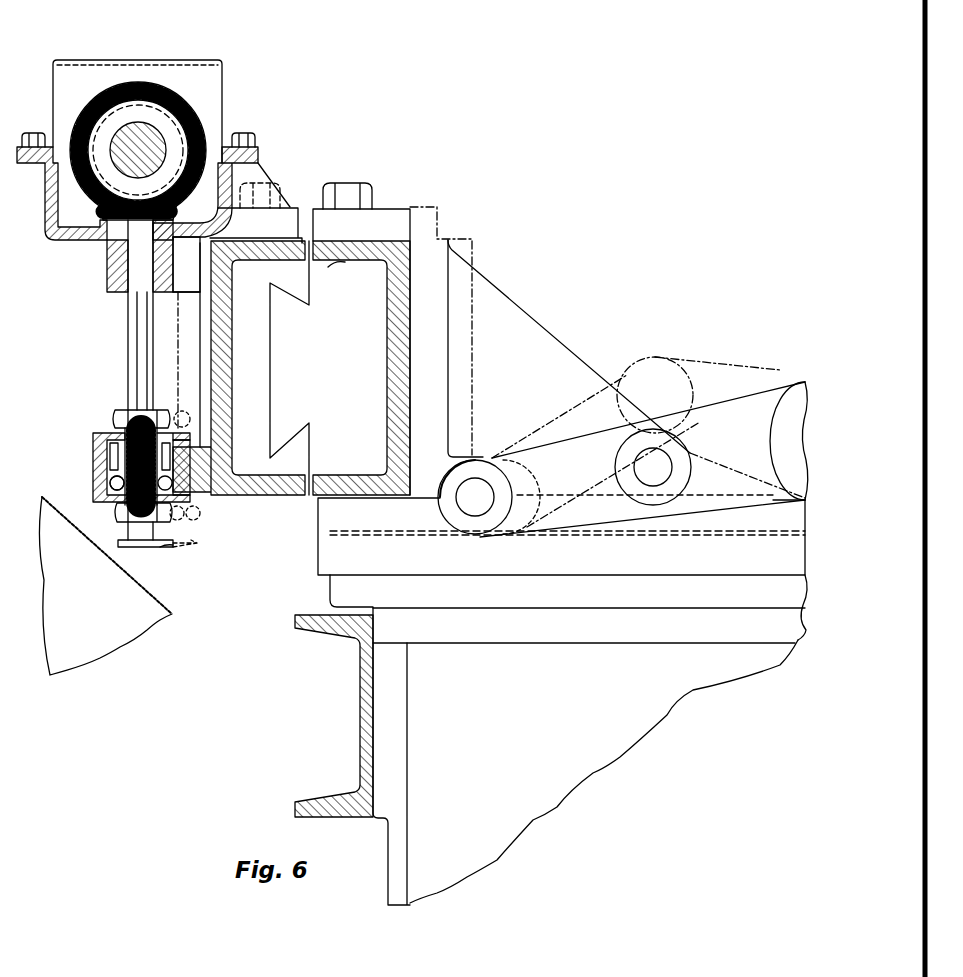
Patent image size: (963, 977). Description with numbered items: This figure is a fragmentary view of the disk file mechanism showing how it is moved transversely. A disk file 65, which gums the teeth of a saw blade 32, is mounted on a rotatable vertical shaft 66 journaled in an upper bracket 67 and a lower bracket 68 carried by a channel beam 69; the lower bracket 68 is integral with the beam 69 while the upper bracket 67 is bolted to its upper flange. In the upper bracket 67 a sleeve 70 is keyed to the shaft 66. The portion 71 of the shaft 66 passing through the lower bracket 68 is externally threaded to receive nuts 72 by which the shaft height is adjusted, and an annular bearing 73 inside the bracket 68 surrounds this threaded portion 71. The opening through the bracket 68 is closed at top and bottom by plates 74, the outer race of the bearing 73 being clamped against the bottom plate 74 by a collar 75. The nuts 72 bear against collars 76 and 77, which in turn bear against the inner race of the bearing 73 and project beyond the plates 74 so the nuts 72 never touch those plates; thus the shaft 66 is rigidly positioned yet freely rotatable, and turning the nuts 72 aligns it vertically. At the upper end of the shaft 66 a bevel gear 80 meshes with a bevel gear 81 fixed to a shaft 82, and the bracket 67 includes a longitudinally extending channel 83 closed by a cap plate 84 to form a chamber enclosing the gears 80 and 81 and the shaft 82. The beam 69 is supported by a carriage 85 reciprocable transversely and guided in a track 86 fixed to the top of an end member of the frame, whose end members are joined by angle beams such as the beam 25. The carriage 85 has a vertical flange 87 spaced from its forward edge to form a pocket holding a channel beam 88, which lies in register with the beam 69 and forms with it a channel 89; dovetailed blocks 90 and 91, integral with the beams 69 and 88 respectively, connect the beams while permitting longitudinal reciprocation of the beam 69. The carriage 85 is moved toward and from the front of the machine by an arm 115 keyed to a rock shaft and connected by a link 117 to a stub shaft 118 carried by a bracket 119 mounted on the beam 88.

The cap plate 84 is at (116, 61).
The bevel gear 81 is at (178, 103).
The shaft 82 is at (148, 140).
The channel 83 is at (66, 203).
The bevel gear 80 is at (97, 218).
The upper bracket 67 is at (112, 222).
The sleeve 70 is at (120, 290).
The shaft 66 is at (128, 344).
The plates 74 is at (101, 434).
The nuts 72 is at (117, 415).
The collar 75 is at (96, 441).
The lower bracket 68 is at (93, 455).
The collar 76 is at (102, 466).
The threaded portion 71 is at (128, 466).
The annular bearing 73 is at (97, 488).
The collar 77 is at (123, 506).
The disk file 65 is at (165, 548).
The blade 32 is at (105, 586).
The channel beam 69 is at (225, 333).
The dovetailed block 90 is at (239, 368).
The dovetailed block 91 is at (346, 366).
The channel 89 is at (335, 267).
The channel beam 88 is at (390, 304).
The vertical flange 87 is at (607, 352).
The bracket 119 is at (455, 476).
The stub shaft 118 is at (478, 490).
The link 117 is at (605, 445).
The arm 115 is at (644, 447).
The carriage 85 is at (561, 536).
The track 86 is at (568, 607).
The angle beam 25 is at (361, 712).